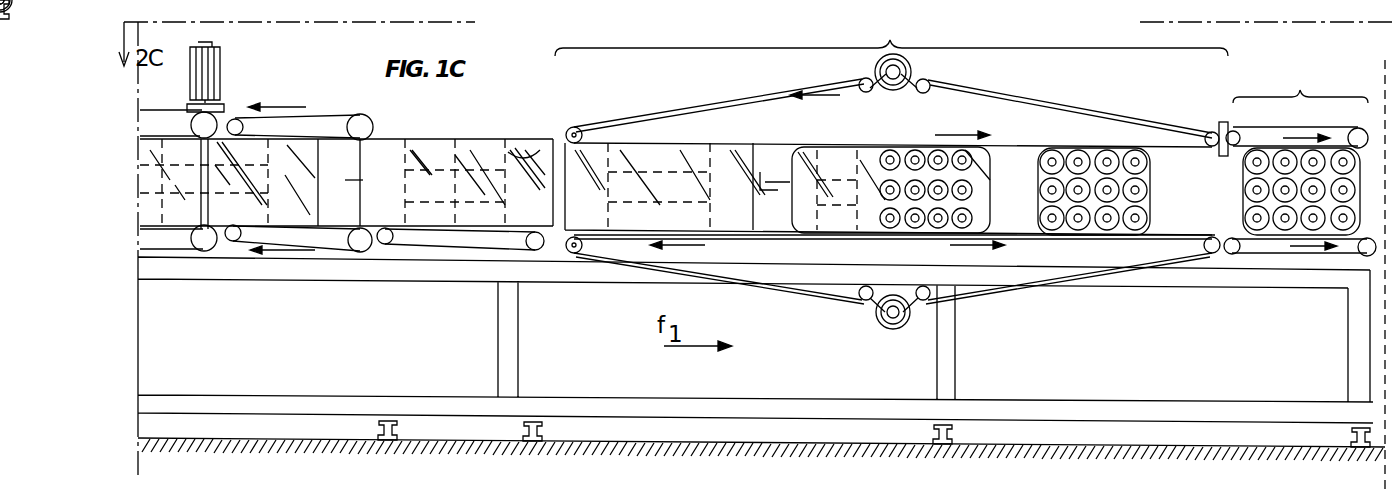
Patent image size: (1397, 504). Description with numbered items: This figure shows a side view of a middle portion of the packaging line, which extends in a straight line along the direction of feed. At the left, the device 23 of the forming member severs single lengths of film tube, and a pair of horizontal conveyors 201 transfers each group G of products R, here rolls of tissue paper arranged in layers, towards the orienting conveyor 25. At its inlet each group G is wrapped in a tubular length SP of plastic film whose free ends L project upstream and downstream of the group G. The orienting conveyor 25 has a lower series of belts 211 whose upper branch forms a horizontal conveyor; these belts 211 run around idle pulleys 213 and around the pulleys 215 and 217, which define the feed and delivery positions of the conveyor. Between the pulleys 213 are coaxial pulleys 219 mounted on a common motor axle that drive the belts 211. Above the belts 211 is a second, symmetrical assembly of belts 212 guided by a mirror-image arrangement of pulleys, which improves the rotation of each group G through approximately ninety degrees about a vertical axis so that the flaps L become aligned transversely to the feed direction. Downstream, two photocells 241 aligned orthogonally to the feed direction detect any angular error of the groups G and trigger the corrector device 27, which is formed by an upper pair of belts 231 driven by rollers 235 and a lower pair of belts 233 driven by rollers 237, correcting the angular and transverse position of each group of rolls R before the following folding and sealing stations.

The device 23 is at (198, 252).
The horizontal conveyors 201 is at (342, 118).
The orienting conveyor 25 is at (891, 34).
The lower continuous flexible elements 211 is at (700, 270).
The belts 212 is at (1075, 118).
The pulleys 213 is at (859, 81).
The pulley 215 is at (596, 130).
The pulley 217 is at (1205, 250).
The coaxial pulleys 219 is at (908, 70).
The photocells 241 is at (1216, 122).
The corrector device 27 is at (1300, 82).
The upper pair of horizontal conveyor belts 231 is at (1262, 140).
The lower pair of horizontal conveyor belts 233 is at (1318, 260).
The drive rollers 235 is at (1240, 132).
The drive rollers 237 is at (1228, 258).
The group G is at (155, 145).
The length of plastic film SP is at (525, 152).
The free ends L is at (674, 183).
The rolls of tissue paper R is at (1105, 232).